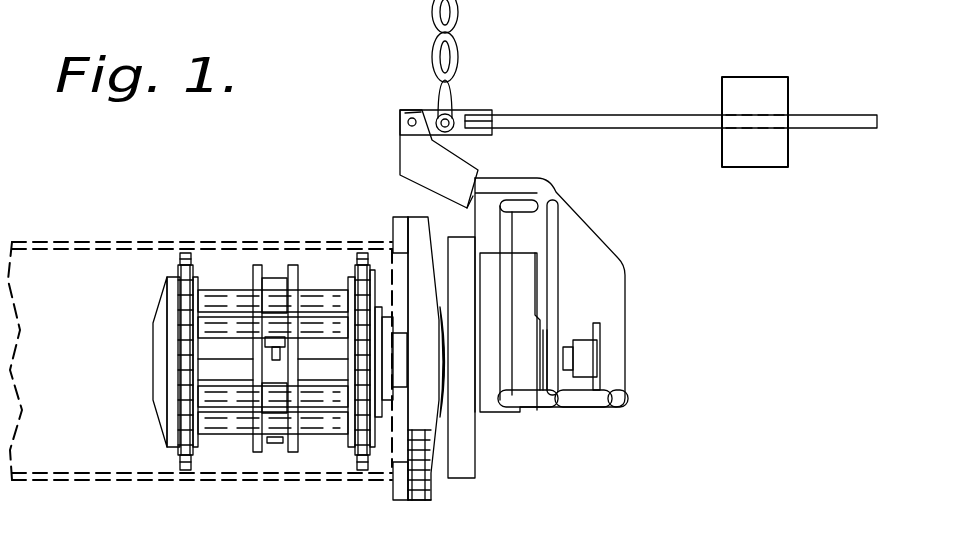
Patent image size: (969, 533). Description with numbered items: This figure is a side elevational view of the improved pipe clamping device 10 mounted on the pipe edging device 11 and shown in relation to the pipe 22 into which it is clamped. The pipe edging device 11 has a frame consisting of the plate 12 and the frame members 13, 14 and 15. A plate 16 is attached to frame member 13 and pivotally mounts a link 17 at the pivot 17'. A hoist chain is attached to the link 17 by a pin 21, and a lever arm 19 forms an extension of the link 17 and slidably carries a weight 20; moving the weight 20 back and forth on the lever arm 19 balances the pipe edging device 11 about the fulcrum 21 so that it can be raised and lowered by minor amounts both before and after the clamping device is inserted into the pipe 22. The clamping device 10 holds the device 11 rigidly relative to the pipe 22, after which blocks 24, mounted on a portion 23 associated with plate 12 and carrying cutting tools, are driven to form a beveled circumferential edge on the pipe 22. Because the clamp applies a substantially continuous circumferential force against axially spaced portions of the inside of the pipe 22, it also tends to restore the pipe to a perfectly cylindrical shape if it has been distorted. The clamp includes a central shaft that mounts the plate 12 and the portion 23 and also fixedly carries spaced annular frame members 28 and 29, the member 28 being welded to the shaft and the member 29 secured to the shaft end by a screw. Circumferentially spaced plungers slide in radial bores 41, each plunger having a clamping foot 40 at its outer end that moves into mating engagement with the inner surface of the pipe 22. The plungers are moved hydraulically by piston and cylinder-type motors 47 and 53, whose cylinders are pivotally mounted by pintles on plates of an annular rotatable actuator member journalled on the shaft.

The pipe clamping device 10 is at (236, 232).
The pipe edging device 11 is at (383, 202).
The plate 12 is at (430, 492).
The frame member 13 is at (618, 340).
The frame member 14 is at (555, 280).
The frame member 15 is at (507, 235).
The plate 16 is at (418, 157).
The link 17 is at (483, 66).
The pivot 17' is at (364, 105).
The lever arm 19 is at (660, 113).
The weight 20 is at (752, 157).
The pin 21 is at (420, 112).
The pipe 22 is at (70, 243).
The portion 23 is at (523, 529).
The blocks 24 is at (392, 217).
The annular frame member 28 is at (380, 250).
The annular frame member 29 is at (172, 424).
The clamping foot 40 is at (187, 362).
The radial bores 41 is at (363, 402).
The piston and cylinder-type motor 47 is at (275, 410).
The piston and cylinder-type motor 53 is at (272, 300).